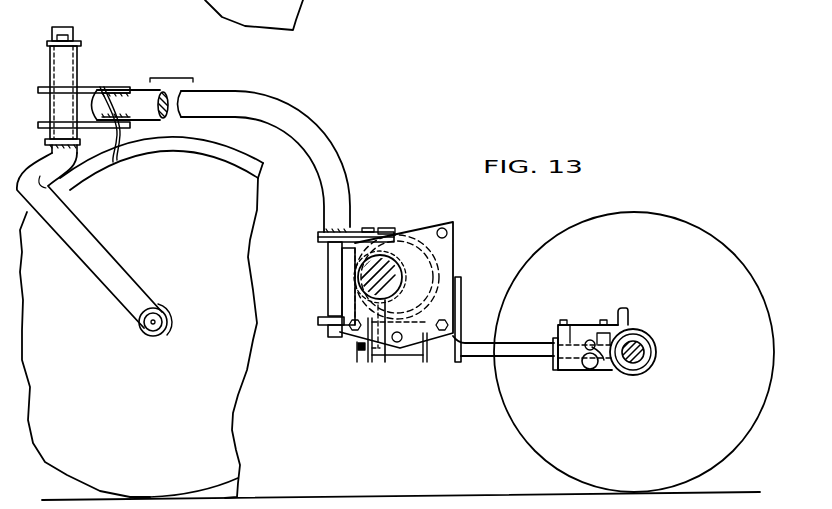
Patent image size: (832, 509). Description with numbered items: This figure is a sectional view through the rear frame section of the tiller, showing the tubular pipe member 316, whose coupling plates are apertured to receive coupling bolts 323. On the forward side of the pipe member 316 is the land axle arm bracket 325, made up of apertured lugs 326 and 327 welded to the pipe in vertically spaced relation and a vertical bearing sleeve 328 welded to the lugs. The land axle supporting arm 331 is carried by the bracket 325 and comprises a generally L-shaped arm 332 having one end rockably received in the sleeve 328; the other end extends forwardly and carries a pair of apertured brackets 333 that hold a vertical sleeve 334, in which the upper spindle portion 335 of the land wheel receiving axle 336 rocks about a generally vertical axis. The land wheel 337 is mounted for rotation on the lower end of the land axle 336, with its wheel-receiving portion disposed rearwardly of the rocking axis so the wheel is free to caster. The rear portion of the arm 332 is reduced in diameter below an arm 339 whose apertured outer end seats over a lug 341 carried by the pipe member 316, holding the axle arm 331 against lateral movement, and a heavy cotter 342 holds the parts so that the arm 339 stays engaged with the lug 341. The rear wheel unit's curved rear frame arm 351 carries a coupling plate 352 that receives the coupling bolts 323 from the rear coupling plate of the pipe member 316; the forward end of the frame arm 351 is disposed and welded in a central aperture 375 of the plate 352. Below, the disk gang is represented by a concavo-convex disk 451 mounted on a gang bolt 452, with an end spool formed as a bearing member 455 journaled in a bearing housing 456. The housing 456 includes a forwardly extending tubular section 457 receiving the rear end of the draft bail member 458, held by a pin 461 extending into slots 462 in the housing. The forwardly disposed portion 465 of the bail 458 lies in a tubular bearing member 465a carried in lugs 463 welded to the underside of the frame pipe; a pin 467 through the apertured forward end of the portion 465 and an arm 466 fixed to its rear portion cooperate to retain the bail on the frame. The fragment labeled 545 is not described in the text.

The tubular or pipe member 316 is at (408, 240).
The coupling bolts 323 is at (450, 239).
The land axle arm bracket 325 is at (326, 267).
The apertured lug 326 is at (318, 240).
The apertured lug 327 is at (320, 322).
The vertical bearing sleeve 328 is at (332, 290).
The land axle supporting arm 331 is at (290, 97).
The L-shaped arm 332 is at (187, 100).
The apertured brackets 333 is at (115, 133).
The vertical sleeve 334 is at (65, 53).
The upper spindle portion 335 is at (80, 64).
The land wheel receiving axle 336 is at (105, 247).
The land wheel 337 is at (226, 435).
The arm 339 is at (368, 230).
The lug 341 is at (386, 231).
The heavy cotter 342 is at (333, 338).
The rear frame arm 351 is at (383, 350).
The coupling plate 352 is at (440, 258).
The central aperture 375 is at (398, 276).
The concavo-convex disks 451 is at (721, 260).
The gang bolt 452 is at (657, 356).
The bearing members 455 is at (643, 341).
The bearing housing 456 is at (586, 368).
The forwardly extending tubular section 457 is at (556, 343).
The draft bail member 458 is at (490, 362).
The pin 461 is at (576, 369).
The slots 462 is at (603, 368).
The lugs 463 is at (368, 362).
The forwardly disposed portion 465 is at (454, 335).
The tubular bearing member 465a is at (412, 355).
The arm 466 is at (461, 306).
The pin 467 is at (359, 352).
The link 545 is at (374, 15).